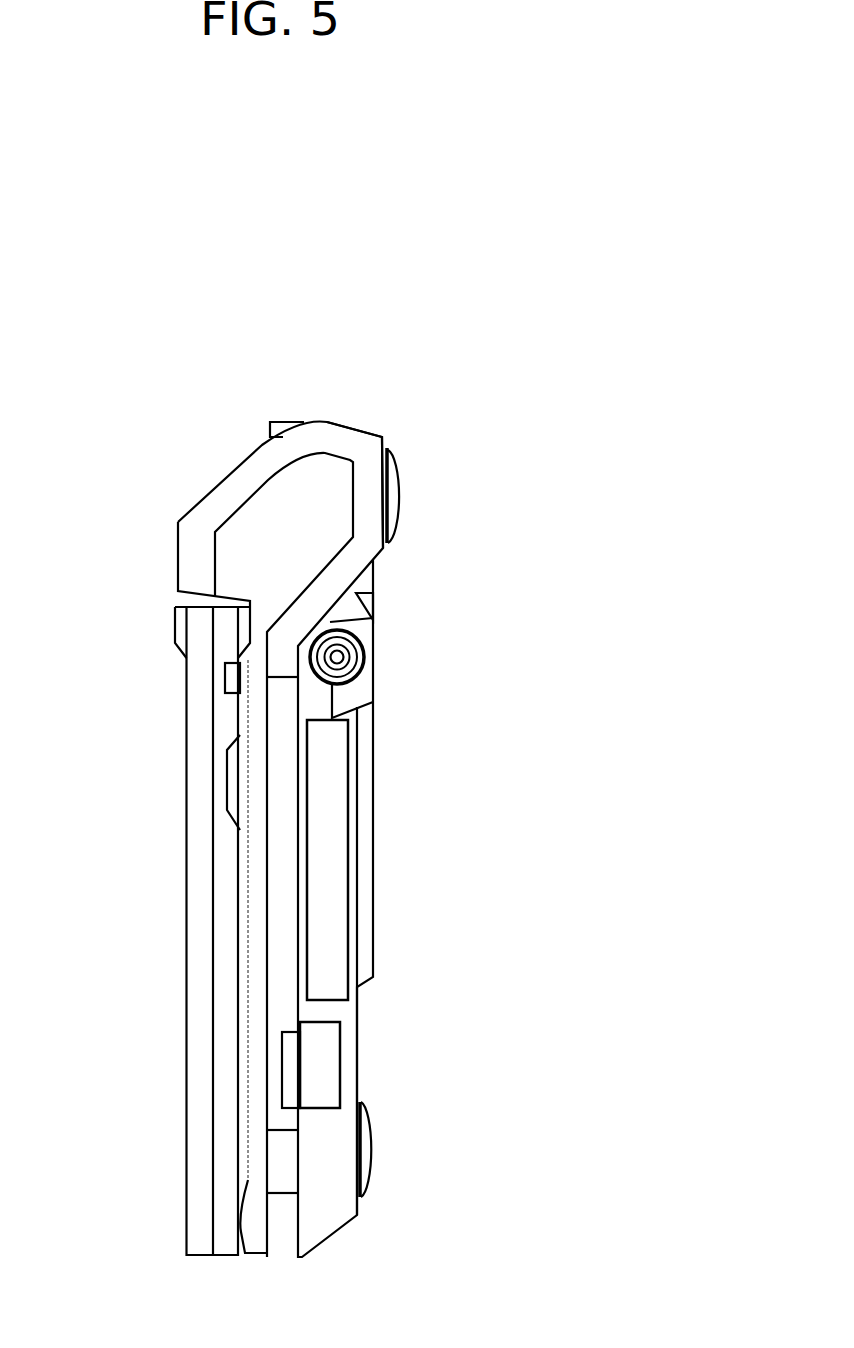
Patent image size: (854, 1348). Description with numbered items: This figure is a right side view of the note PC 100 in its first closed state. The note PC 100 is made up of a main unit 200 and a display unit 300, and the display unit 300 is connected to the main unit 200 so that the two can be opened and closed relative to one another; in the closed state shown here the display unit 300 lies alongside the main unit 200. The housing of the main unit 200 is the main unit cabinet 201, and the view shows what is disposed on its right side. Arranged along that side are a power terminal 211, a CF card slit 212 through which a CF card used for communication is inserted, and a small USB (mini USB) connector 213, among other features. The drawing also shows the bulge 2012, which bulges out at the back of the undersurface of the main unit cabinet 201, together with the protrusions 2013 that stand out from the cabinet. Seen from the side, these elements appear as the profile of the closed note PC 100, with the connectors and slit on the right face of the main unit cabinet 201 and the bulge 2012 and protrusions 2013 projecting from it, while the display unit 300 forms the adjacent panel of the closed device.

The note PC 100 is at (354, 320).
The main unit 200 is at (415, 746).
The main unit cabinet 201 is at (345, 1015).
The power terminal 211 is at (365, 642).
The CF card slit 212 is at (330, 853).
The small USB (mini USB) connector 213 is at (330, 1063).
The display unit 300 is at (167, 832).
The bulge 2012 is at (383, 440).
The protrusions 2013 is at (398, 488).